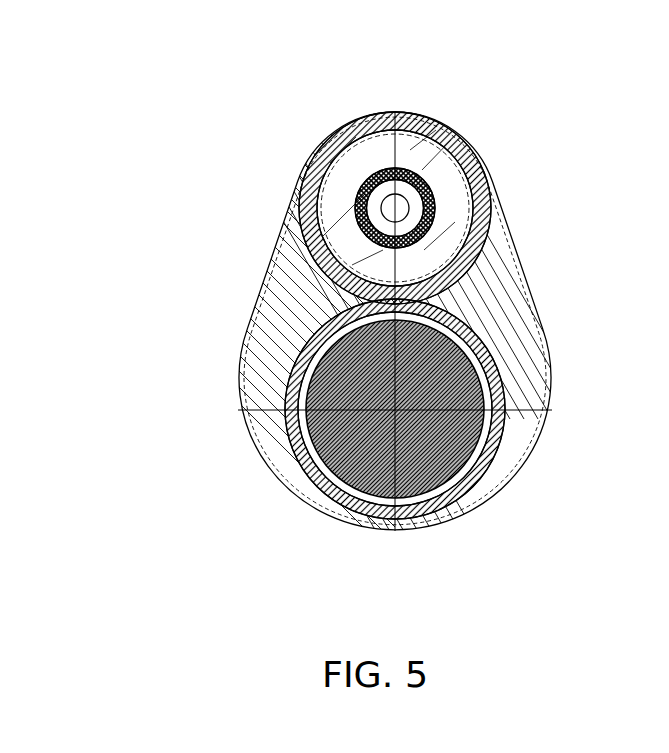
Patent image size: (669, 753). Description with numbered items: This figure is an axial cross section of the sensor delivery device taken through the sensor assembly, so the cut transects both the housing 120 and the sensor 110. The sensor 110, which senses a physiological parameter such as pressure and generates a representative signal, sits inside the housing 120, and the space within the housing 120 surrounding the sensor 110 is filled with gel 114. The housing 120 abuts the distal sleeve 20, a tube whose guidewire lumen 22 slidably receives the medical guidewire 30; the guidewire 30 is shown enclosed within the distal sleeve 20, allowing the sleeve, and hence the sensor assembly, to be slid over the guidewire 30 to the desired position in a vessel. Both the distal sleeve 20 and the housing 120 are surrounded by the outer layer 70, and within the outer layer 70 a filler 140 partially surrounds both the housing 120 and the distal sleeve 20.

The distal sleeve 20 is at (488, 440).
The guidewire lumen 22 is at (483, 400).
The medical guidewire 30 is at (448, 370).
The outer layer 70 is at (268, 250).
The sensor 110 is at (427, 187).
The gel 114 is at (425, 150).
The housing 120 is at (477, 202).
The filler 140 is at (273, 295).